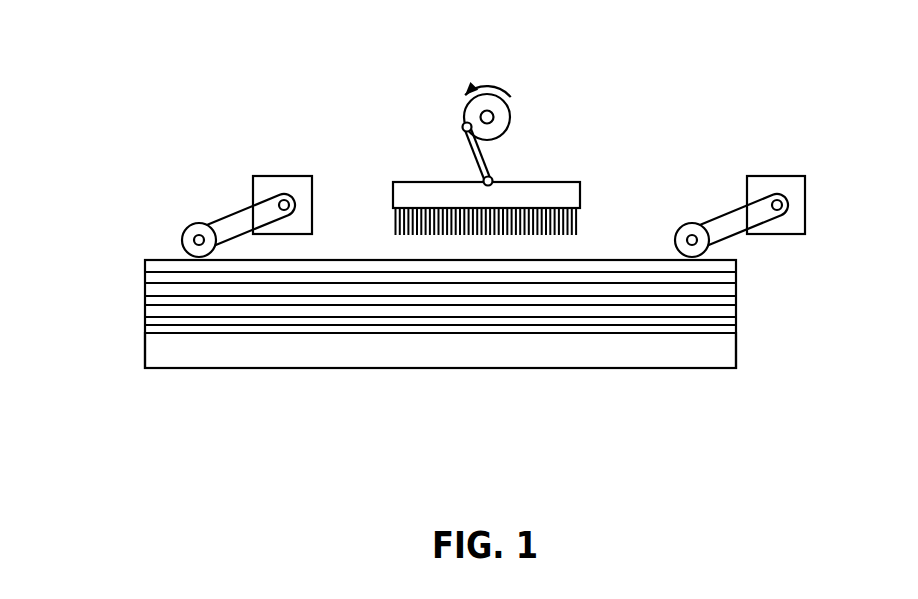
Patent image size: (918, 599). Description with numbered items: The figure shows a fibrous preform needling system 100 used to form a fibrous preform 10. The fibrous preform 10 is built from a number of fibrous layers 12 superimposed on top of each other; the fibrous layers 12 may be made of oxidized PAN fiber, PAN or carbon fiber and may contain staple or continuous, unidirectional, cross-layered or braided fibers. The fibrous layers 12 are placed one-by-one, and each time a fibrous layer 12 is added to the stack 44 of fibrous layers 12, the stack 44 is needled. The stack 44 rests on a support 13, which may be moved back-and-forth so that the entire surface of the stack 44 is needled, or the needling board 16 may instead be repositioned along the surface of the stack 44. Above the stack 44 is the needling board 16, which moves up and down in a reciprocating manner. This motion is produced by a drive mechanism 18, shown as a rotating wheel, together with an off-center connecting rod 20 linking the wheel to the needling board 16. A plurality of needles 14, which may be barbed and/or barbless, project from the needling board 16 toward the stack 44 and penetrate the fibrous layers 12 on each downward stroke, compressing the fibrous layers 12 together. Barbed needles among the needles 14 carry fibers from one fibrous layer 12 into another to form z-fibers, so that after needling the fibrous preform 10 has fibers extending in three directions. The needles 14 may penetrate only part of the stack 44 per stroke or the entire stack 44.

The fibrous preform needling system 100 is at (315, 80).
The fibrous preform 10 is at (134, 280).
The fibrous layer 12 is at (145, 318).
The support 13 is at (222, 372).
The needles 14 is at (593, 207).
The needling board 16 is at (415, 182).
The drive mechanism 18 is at (509, 110).
The off-center connecting rod 20 is at (486, 161).
The stack 44 is at (163, 257).